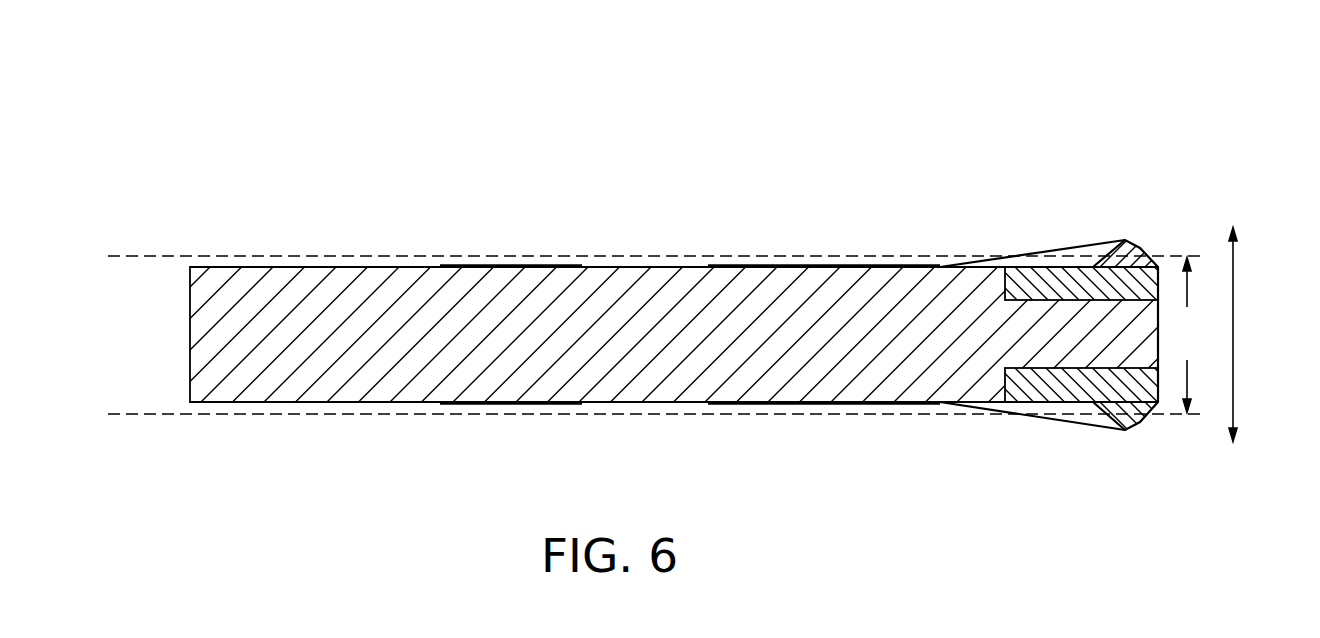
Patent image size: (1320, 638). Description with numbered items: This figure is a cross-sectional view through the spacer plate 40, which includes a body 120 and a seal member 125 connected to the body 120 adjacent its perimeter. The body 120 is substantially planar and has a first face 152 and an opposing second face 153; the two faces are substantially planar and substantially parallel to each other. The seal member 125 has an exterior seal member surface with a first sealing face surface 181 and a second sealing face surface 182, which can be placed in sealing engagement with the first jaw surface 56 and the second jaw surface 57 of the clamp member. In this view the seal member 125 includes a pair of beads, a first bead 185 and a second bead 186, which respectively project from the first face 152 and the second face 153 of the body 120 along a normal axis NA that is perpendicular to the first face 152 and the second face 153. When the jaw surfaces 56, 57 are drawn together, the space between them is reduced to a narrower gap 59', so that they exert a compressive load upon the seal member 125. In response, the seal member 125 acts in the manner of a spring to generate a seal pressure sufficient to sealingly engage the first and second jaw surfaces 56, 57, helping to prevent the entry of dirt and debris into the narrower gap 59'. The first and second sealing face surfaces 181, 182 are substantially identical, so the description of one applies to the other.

The spacer plate 40 is at (132, 140).
The body 120 is at (352, 363).
The second face 153 is at (628, 254).
The first face 152 is at (623, 417).
The second jaw surface 57 is at (648, 256).
The first jaw surface 56 is at (655, 413).
The seal member 125 is at (1067, 380).
The second sealing face surface 182 is at (1054, 253).
The first sealing face surface 181 is at (1075, 417).
The second bead 186 is at (1125, 240).
The first bead 185 is at (1123, 430).
The narrower gap 59' is at (1185, 335).
The normal axis NA is at (1235, 305).